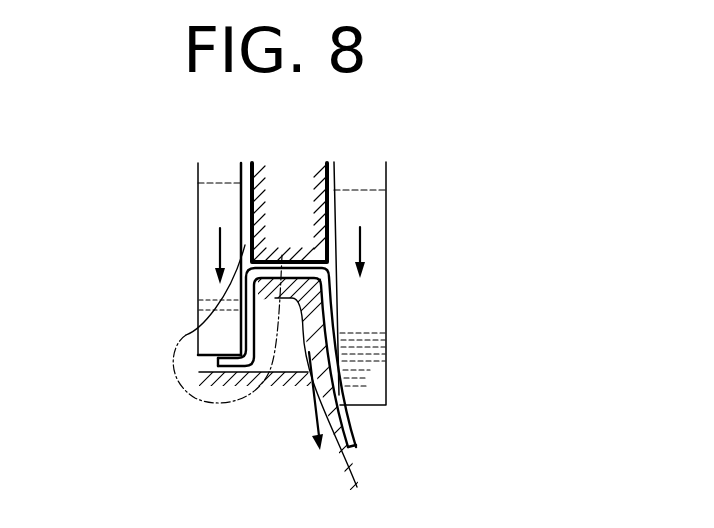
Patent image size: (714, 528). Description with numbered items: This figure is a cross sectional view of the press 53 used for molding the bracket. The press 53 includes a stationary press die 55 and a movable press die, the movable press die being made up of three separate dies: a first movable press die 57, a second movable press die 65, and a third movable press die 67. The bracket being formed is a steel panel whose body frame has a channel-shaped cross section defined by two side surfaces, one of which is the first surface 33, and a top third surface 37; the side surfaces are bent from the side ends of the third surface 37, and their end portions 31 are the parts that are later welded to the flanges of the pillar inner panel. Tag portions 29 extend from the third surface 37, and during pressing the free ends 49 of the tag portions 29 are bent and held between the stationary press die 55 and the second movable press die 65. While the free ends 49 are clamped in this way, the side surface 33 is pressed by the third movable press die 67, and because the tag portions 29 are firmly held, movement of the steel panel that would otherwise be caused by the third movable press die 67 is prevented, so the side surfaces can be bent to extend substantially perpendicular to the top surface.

The tag portion 29 is at (240, 320).
The end portion 31 is at (355, 437).
The first surface 33 is at (343, 318).
The third surface 37 is at (332, 237).
The free end 49 is at (207, 328).
The press 53 is at (393, 402).
The stationary press die 55 is at (288, 373).
The first movable press die 57 is at (337, 175).
The second movable press die 65 is at (207, 210).
The third movable press die 67 is at (375, 257).